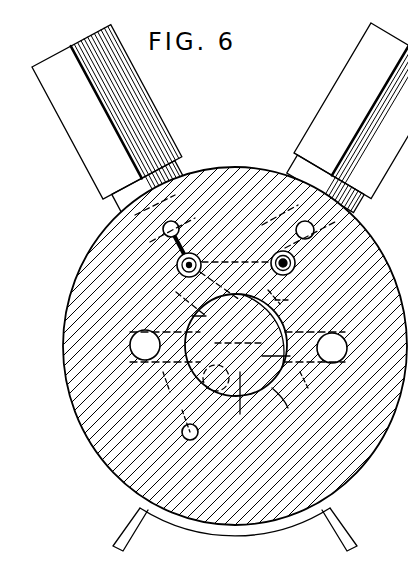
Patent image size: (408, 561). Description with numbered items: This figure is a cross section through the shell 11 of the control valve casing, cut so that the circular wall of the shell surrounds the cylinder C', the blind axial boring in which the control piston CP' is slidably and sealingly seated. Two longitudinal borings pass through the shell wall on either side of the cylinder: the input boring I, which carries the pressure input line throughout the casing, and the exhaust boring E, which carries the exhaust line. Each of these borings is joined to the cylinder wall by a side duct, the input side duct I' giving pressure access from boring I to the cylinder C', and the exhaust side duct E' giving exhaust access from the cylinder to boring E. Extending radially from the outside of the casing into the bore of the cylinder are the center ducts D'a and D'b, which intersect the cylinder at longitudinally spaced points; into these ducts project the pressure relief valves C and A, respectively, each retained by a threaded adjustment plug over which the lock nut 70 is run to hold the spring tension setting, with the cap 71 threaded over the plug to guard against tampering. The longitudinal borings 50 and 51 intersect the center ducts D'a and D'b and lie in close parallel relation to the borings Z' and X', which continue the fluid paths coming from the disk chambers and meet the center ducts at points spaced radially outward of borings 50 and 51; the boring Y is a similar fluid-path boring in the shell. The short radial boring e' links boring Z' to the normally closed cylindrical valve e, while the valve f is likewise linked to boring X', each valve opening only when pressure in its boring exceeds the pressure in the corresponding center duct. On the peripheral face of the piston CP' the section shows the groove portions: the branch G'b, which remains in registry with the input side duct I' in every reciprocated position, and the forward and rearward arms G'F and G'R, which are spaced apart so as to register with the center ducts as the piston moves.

The pressure relief valve A is at (62, 42).
The pressure relief valve C is at (347, 118).
The shell 11 is at (60, 314).
The cap 71 is at (78, 135).
The lock nut 70 is at (112, 204).
The longitudinal boring 50 is at (177, 266).
The longitudinal boring 51 is at (272, 253).
The valve e is at (203, 261).
The short radial boring e' is at (196, 240).
The valve f is at (296, 267).
The exhaust boring E is at (157, 335).
The exhaust side duct E' is at (155, 389).
The input boring I is at (326, 353).
The input side duct I' is at (313, 387).
The boring X' is at (297, 218).
The boring Z' is at (165, 218).
The boring Y is at (191, 440).
The center duct D'a is at (235, 281).
The center duct D'b is at (178, 302).
The rearward arm of groove G'R is at (182, 316).
The forward arm of groove G'F is at (204, 280).
The branch of groove G'b is at (267, 356).
The control piston CP' is at (249, 400).
The cylinder C' is at (288, 406).